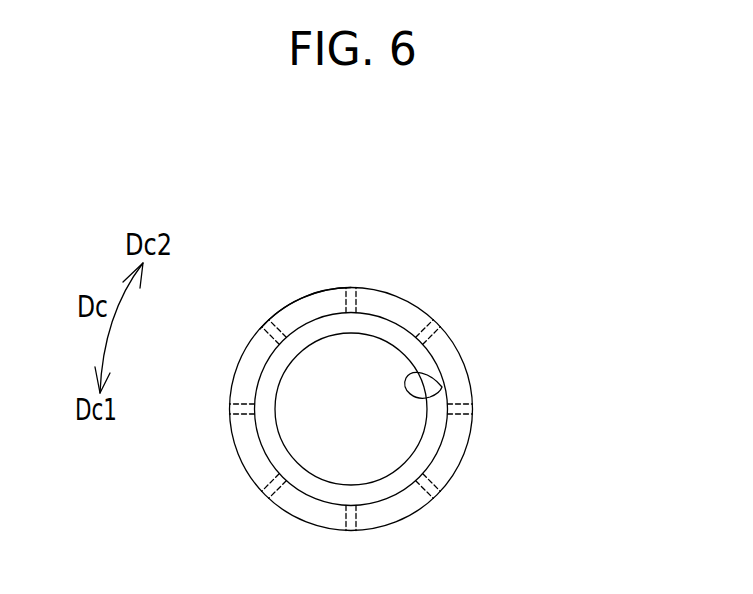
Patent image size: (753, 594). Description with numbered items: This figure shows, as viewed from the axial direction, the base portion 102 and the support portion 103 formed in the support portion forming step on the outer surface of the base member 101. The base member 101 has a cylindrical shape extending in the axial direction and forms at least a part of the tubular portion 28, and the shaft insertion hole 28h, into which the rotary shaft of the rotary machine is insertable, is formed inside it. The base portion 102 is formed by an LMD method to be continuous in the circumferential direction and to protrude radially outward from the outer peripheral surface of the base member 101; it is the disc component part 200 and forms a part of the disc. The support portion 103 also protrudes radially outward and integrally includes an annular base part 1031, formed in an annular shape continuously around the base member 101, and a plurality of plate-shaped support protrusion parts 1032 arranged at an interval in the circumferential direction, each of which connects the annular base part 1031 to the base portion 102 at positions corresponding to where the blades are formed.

The support portion 103 is at (315, 185).
The annular base part 1031 is at (313, 291).
The support protrusion part 1032 is at (352, 290).
The base portion 102 is at (409, 352).
The disc component part 200 is at (373, 288).
The base member 101 is at (450, 385).
The tubular portion 28 is at (420, 332).
The shaft insertion hole 28h is at (442, 387).